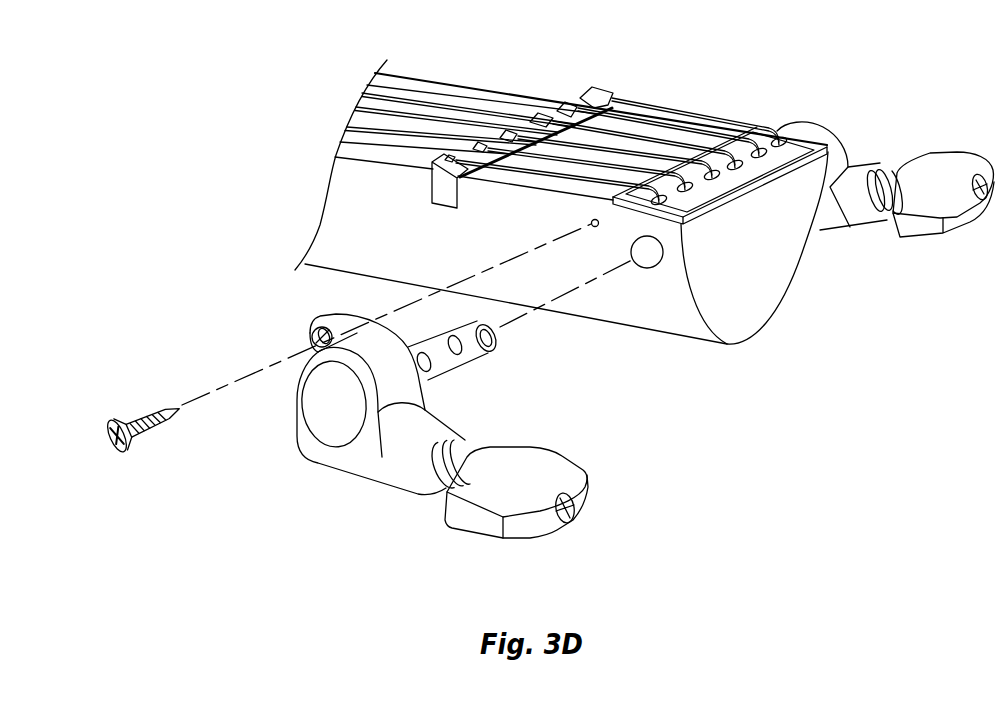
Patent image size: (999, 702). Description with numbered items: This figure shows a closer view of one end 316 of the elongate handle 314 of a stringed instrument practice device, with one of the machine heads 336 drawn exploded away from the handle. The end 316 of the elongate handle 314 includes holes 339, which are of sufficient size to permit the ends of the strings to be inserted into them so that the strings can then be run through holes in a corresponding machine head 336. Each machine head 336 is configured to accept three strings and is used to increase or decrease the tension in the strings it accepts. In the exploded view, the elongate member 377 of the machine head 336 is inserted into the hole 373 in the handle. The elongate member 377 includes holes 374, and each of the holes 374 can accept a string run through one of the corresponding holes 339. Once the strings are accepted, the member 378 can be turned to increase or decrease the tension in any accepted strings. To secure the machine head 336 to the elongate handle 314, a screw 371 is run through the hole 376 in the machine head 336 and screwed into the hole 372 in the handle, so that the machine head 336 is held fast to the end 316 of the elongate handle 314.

The elongate handle 314 is at (473, 82).
The end 316 is at (764, 262).
The machine head 336 is at (393, 505).
The holes 339 is at (758, 132).
The screw 371 is at (109, 446).
The hole 372 is at (593, 220).
The hole 373 is at (644, 268).
The holes 374 is at (427, 382).
The hole 376 is at (311, 338).
The elongate member 377 is at (431, 337).
The member 378 is at (533, 489).